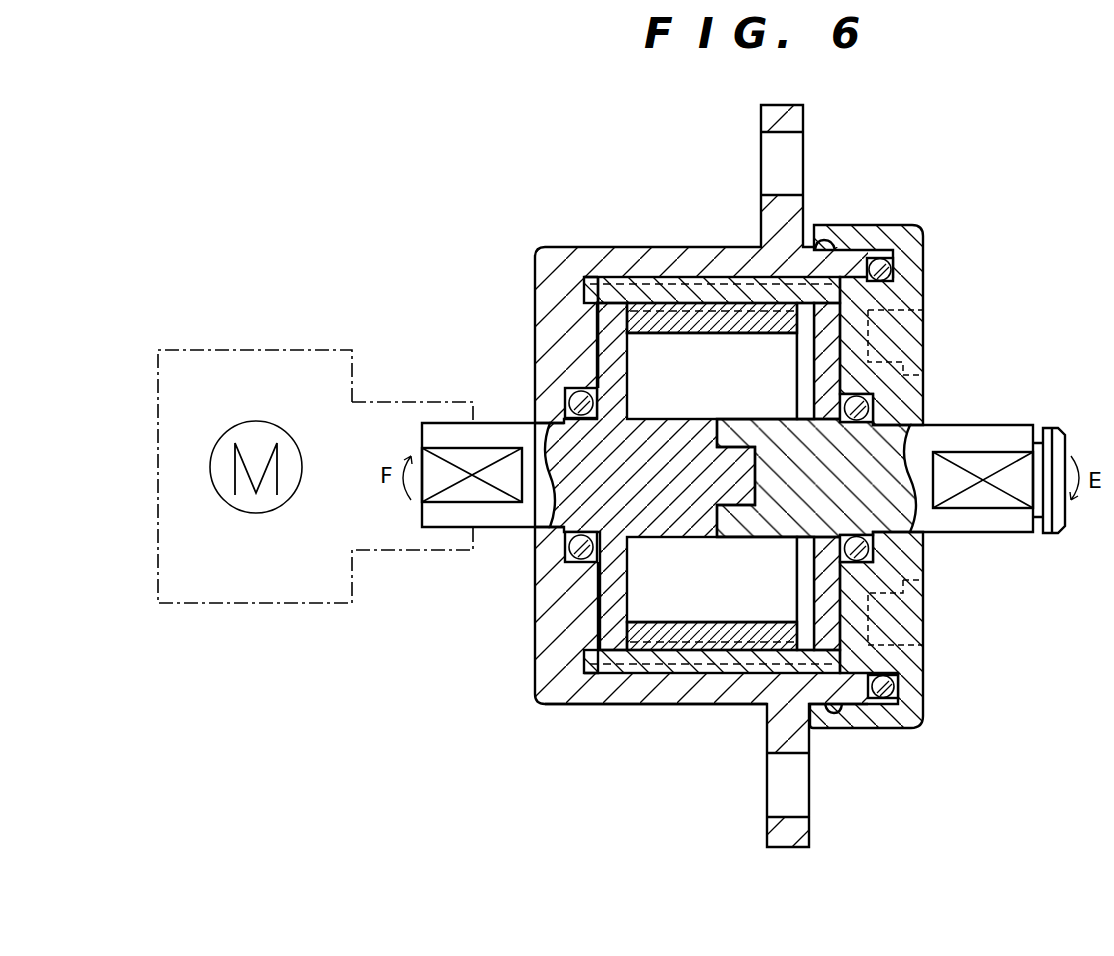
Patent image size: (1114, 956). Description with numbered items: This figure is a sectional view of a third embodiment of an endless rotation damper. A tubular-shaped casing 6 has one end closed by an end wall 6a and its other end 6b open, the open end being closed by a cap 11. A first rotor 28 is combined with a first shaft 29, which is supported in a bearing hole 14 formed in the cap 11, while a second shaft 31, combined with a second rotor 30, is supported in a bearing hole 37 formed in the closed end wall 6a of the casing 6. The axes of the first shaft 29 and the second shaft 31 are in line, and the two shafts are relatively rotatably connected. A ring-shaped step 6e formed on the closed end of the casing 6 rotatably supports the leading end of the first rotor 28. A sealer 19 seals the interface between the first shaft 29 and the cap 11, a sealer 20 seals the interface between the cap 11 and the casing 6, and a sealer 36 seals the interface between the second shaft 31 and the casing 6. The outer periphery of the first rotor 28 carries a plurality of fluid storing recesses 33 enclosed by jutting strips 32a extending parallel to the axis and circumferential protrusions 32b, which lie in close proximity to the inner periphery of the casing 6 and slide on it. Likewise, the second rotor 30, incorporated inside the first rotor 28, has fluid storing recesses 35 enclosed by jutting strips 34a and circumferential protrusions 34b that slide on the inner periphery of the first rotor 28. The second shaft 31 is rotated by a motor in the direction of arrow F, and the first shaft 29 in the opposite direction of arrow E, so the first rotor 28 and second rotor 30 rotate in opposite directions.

The casing 6 is at (531, 232).
The end wall 6a is at (545, 690).
The open end 6b is at (881, 244).
The ring-shaped step 6e is at (560, 308).
The cap 11 is at (920, 627).
The bearing hole 14 is at (895, 440).
The sealer 19 is at (877, 550).
The sealer 20 is at (905, 271).
The first rotor 28 is at (830, 331).
The first shaft 29 is at (1012, 440).
The second rotor 30 is at (590, 332).
The second shaft 31 is at (494, 522).
The jutting strips 32a is at (749, 282).
The circumferential protrusions 32b is at (597, 276).
The fluid storing recesses 33 is at (689, 284).
The jutting strips 34a is at (634, 646).
The circumferential protrusions 34b is at (603, 648).
The fluid storing recesses 35 is at (706, 676).
The sealer 36 is at (577, 553).
The bearing hole 37 is at (545, 434).